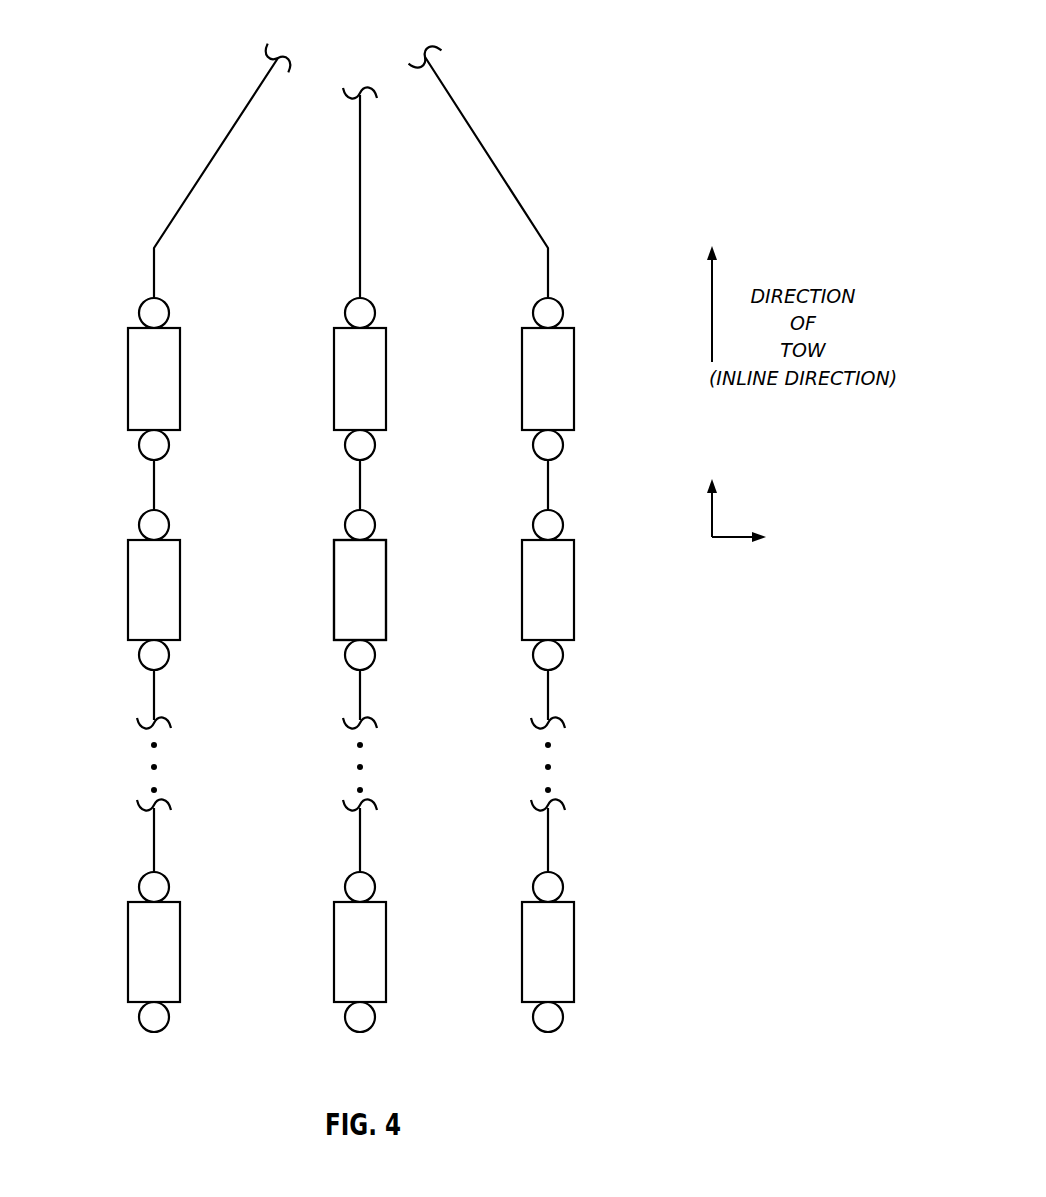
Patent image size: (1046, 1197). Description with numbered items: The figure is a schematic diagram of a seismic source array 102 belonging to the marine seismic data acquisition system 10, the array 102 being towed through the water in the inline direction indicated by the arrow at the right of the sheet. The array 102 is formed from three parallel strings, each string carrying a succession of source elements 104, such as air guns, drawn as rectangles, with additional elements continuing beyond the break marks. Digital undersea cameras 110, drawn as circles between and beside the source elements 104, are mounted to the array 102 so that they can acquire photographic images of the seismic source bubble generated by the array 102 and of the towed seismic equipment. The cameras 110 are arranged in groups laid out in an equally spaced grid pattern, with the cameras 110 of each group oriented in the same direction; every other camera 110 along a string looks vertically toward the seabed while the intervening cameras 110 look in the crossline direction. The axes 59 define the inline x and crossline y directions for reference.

The seismic source array 102 is at (638, 72).
The source element 104 is at (128, 372).
The digital undersea camera 110 is at (140, 315).
The marine seismic data acquisition system 10 is at (387, 585).
The axes 59 is at (773, 494).